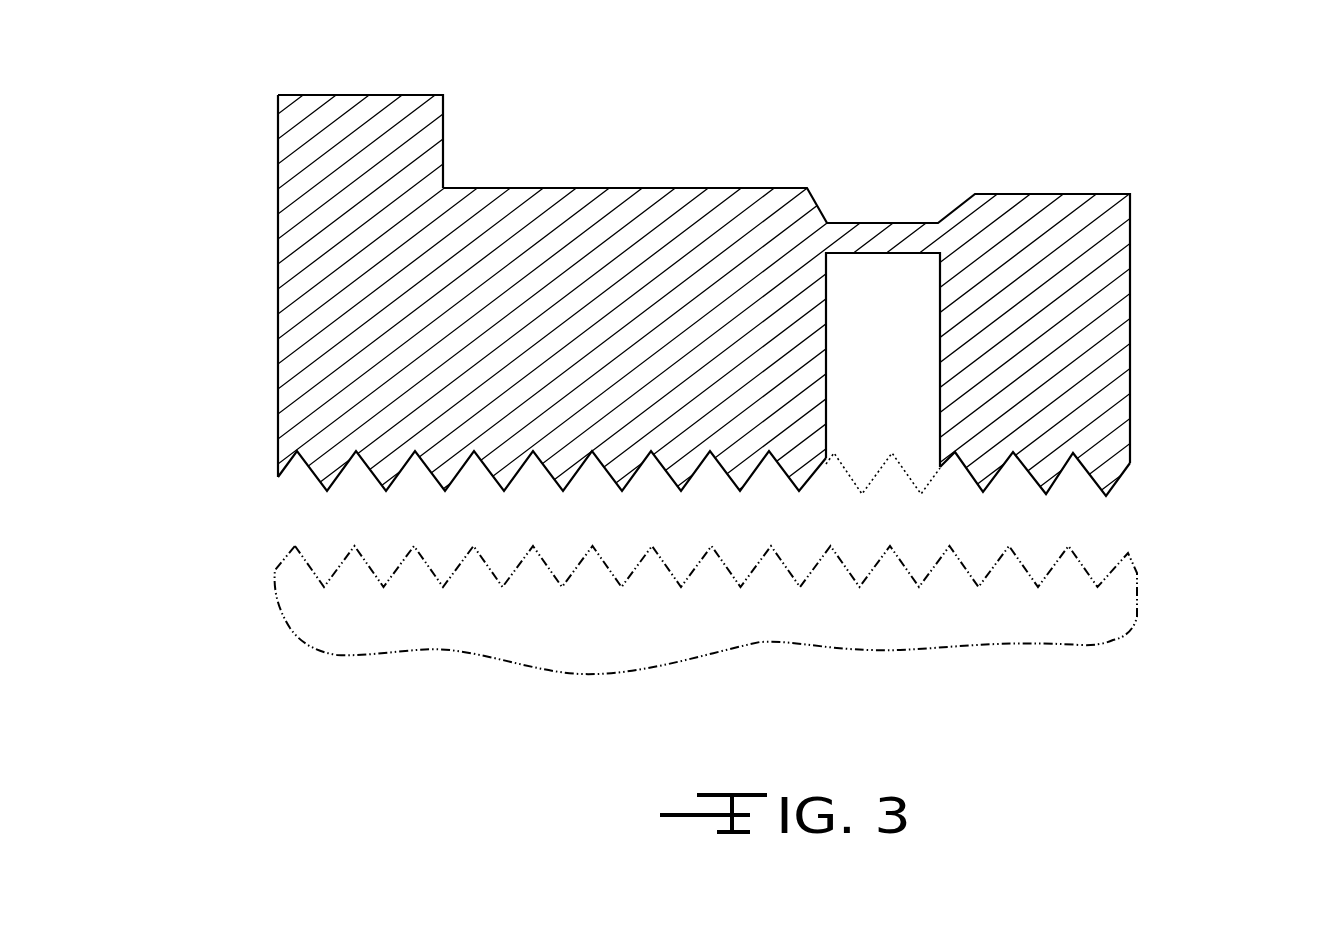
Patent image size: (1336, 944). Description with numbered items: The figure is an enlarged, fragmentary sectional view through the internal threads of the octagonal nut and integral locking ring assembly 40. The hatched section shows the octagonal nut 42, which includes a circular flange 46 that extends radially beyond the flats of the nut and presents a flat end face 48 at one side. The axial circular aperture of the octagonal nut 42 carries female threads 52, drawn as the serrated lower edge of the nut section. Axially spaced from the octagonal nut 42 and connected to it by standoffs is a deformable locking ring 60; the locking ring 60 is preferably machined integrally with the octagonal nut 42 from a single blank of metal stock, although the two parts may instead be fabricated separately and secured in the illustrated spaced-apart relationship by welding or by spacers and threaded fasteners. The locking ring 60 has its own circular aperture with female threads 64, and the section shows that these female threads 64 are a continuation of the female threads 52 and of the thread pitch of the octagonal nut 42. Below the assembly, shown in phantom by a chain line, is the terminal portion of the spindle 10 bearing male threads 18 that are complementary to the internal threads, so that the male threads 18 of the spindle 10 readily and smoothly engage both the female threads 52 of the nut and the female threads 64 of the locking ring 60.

The spindle 10 is at (764, 472).
The male threads 18 is at (1080, 555).
The octagonal nut and integral locking ring assembly 40 is at (755, 472).
The octagonal nut 42 is at (633, 212).
The circular flange 46 is at (363, 95).
The end face 48 is at (278, 318).
The female threads 52 is at (580, 470).
The deformable locking ring 60 is at (1030, 194).
The female threads 64 is at (1063, 478).